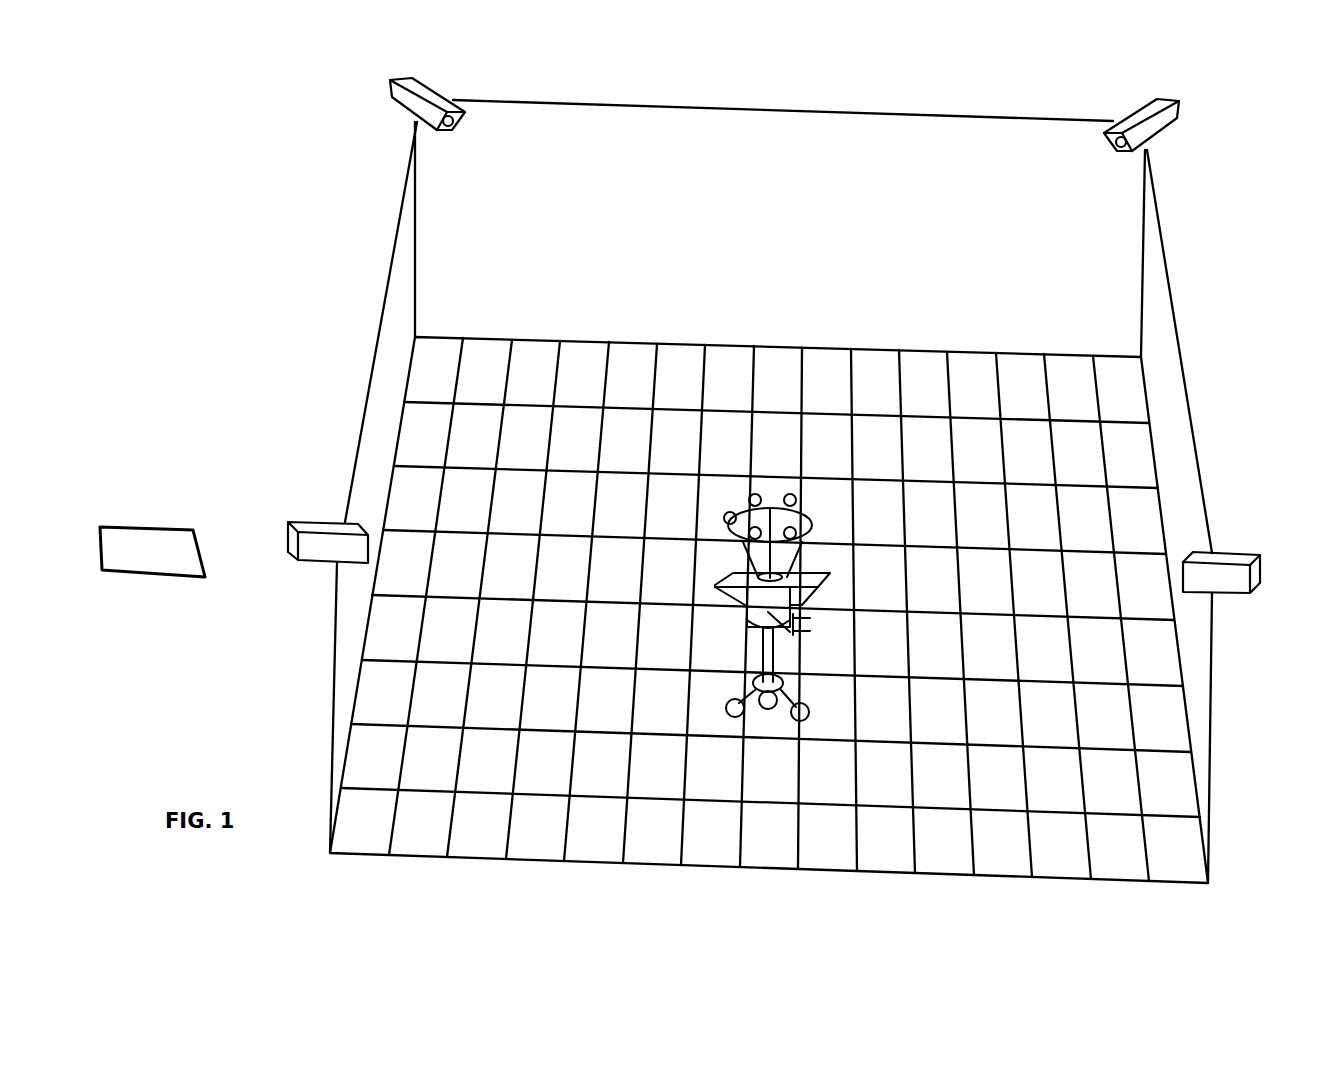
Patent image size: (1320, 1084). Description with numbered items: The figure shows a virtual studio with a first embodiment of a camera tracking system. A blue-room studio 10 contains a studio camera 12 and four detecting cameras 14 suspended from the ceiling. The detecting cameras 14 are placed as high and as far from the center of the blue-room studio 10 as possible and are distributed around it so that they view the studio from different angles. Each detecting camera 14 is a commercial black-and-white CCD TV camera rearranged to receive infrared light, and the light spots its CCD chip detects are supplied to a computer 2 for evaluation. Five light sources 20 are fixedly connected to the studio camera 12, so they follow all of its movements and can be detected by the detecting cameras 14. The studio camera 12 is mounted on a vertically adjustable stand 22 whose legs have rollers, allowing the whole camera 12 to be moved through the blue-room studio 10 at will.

The blue-room studio 10 is at (770, 153).
The detecting camera 14 is at (390, 95).
The computer 2 is at (167, 525).
The studio camera 12 is at (677, 608).
The light source 20 is at (740, 510).
The vertically adjustable stand (tripod) 22 is at (768, 648).